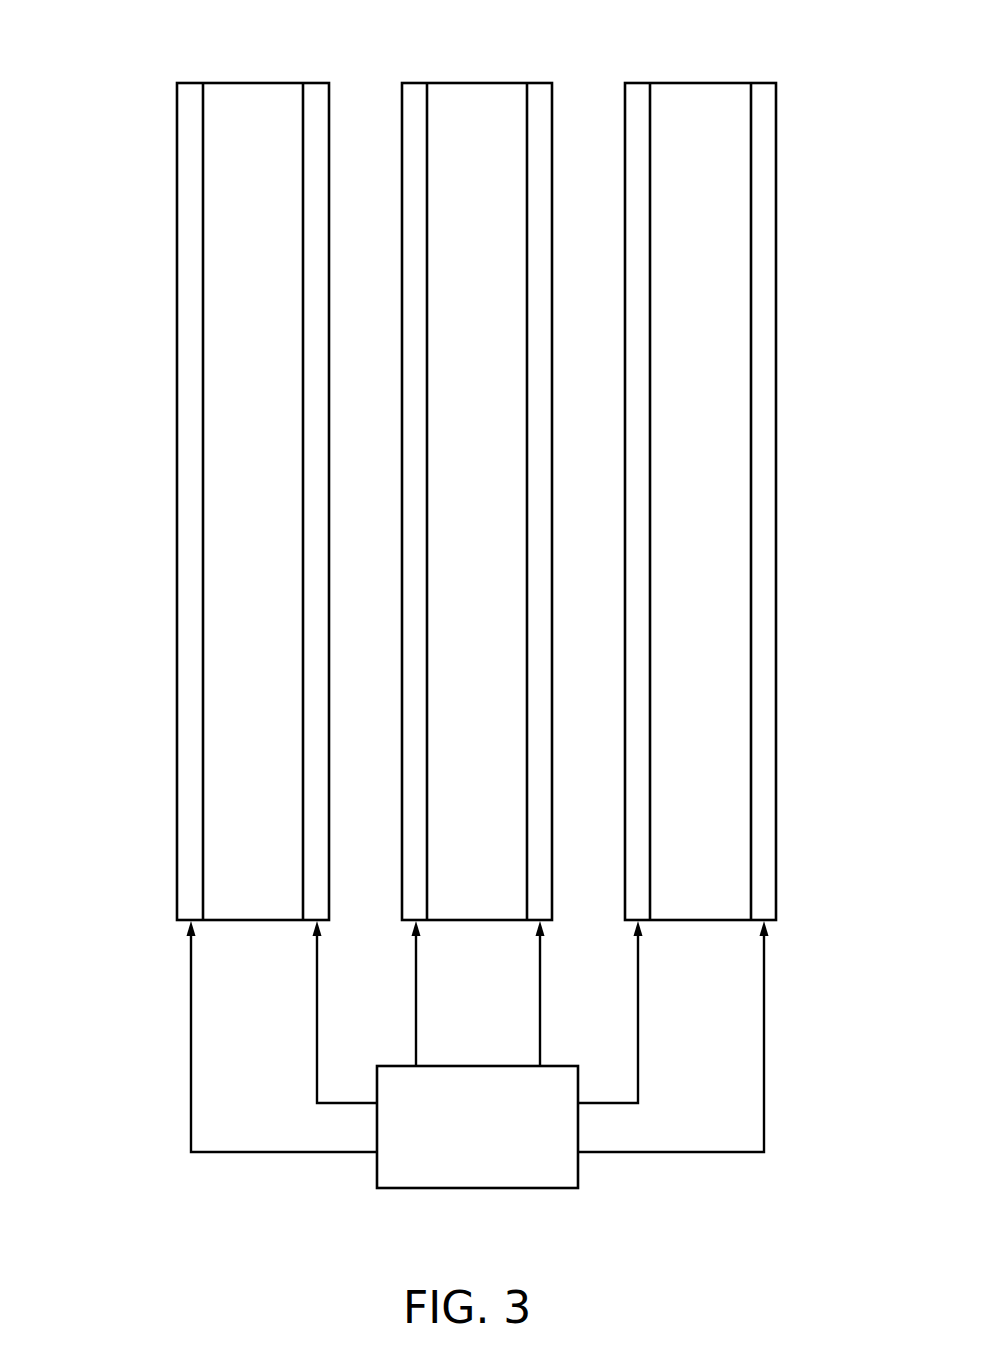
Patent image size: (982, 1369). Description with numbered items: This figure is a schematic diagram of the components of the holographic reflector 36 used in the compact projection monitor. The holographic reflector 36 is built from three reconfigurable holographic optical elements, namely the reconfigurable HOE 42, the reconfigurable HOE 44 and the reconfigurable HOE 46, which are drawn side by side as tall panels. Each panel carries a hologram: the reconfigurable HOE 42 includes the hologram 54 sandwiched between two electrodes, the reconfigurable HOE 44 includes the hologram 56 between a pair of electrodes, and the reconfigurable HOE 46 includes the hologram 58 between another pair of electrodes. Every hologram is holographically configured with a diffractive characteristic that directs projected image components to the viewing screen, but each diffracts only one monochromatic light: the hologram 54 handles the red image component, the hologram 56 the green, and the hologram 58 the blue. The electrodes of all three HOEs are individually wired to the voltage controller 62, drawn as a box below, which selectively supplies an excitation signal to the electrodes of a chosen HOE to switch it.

The holographic reflector 36 is at (92, 186).
The reconfigurable HOE 42 is at (329, 70).
The reconfigurable HOE 44 is at (402, 70).
The reconfigurable HOE 46 is at (776, 70).
The hologram 54 is at (225, 645).
The hologram 56 is at (492, 623).
The hologram 58 is at (727, 590).
The voltage controller 62 is at (530, 1190).